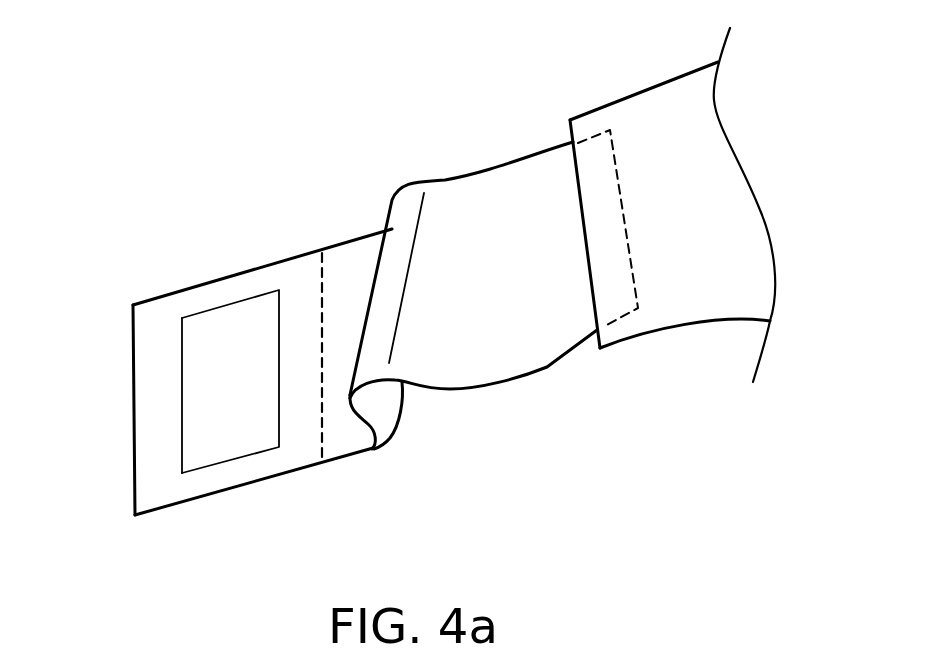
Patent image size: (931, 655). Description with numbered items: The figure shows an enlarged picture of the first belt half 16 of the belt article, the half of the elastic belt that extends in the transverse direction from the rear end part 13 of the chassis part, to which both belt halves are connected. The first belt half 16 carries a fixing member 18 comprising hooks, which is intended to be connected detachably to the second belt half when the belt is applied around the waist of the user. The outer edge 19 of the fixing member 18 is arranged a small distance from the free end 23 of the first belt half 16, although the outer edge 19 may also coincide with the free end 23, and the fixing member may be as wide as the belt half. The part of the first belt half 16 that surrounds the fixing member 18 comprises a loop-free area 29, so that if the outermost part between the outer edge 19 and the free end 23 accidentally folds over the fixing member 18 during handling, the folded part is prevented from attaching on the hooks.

The rear end part 13 is at (653, 120).
The first belt half 16 is at (357, 260).
The fixing member 18 is at (238, 317).
The outer edge 19 is at (178, 447).
The free end 23 is at (133, 368).
The loop-free area 29 is at (244, 468).